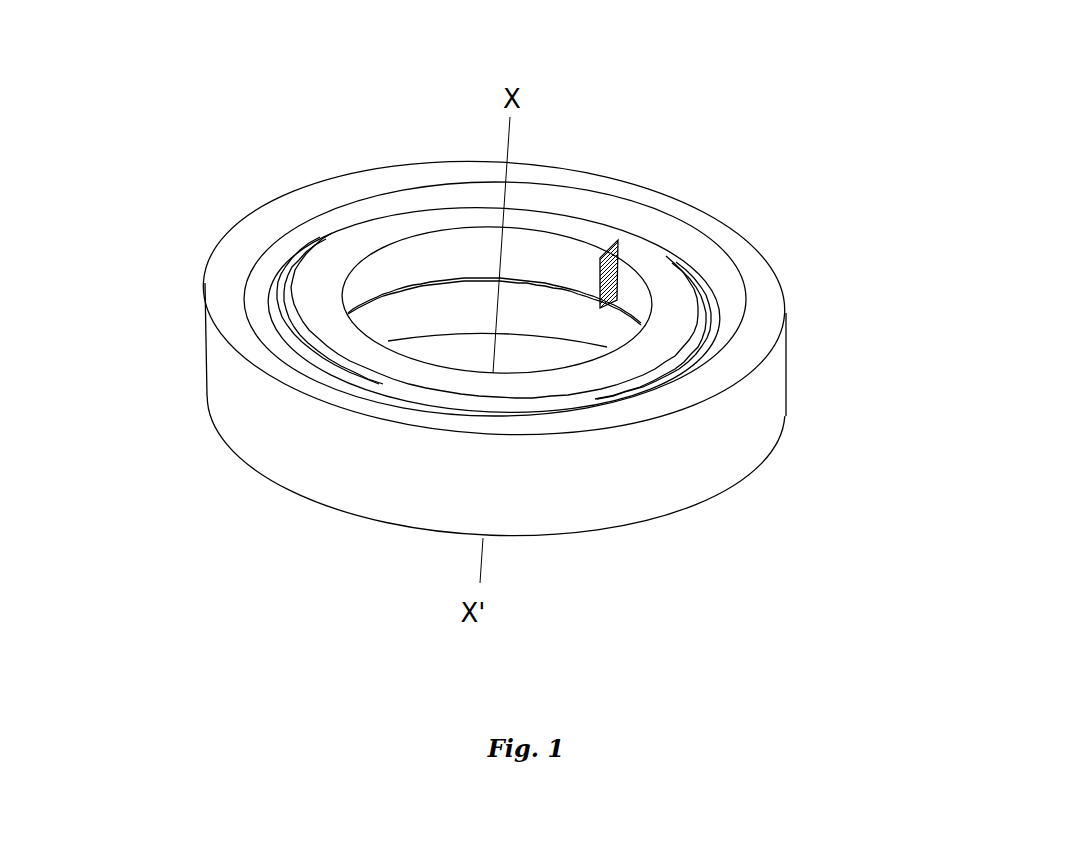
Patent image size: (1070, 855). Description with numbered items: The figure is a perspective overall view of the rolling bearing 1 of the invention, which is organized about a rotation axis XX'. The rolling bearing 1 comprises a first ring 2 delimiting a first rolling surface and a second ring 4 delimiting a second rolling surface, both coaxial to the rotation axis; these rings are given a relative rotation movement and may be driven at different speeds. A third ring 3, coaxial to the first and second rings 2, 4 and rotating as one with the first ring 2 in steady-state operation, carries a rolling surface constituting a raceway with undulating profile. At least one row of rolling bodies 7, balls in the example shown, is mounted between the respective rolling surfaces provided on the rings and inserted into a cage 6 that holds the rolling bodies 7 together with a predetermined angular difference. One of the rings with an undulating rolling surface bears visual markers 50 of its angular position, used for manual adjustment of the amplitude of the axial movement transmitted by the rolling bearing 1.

The rolling bearing 1 is at (629, 397).
The first ring 2 is at (528, 252).
The third ring 3 is at (437, 312).
The second ring 4 is at (733, 263).
The cage 6 is at (708, 343).
The rolling bodies 7 is at (257, 313).
The visual markers 50 is at (600, 258).